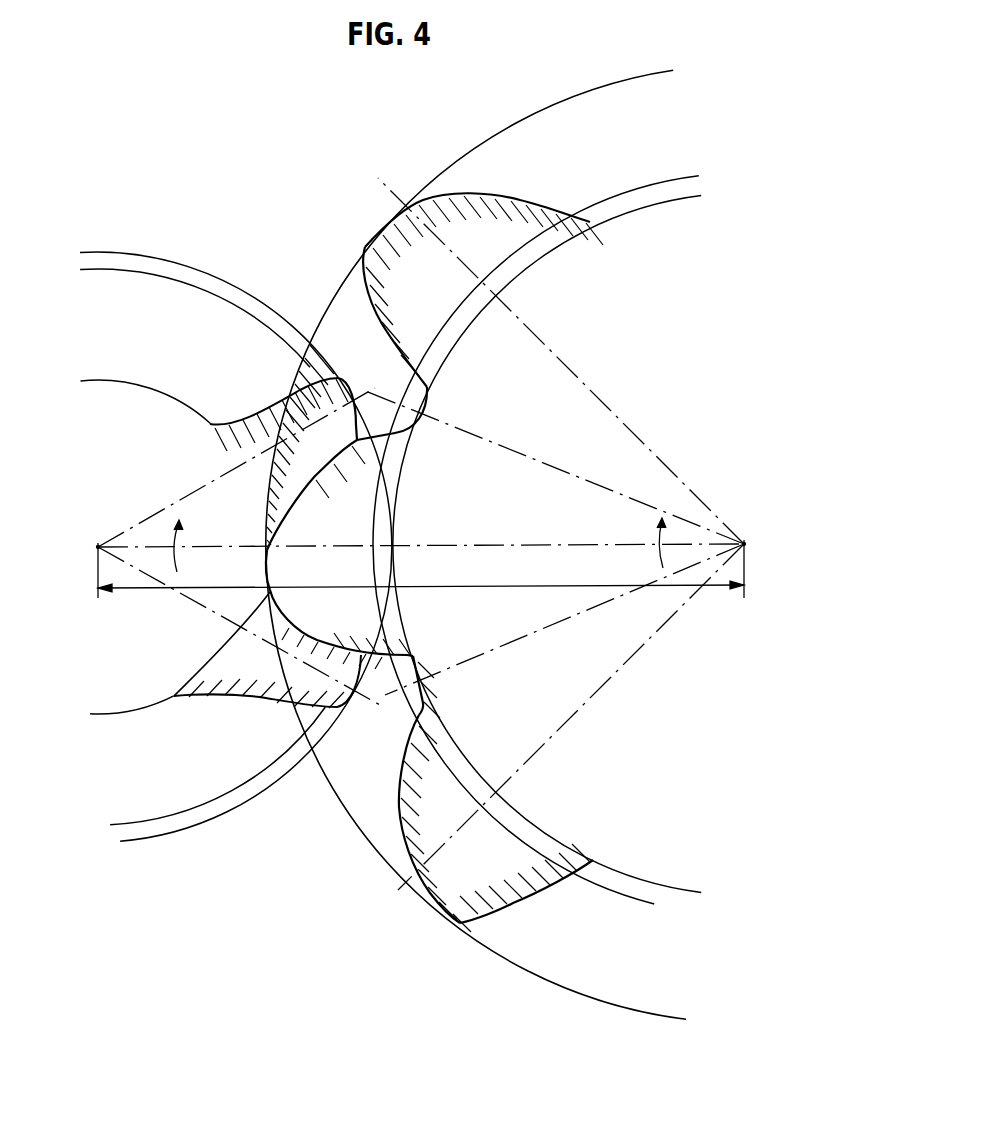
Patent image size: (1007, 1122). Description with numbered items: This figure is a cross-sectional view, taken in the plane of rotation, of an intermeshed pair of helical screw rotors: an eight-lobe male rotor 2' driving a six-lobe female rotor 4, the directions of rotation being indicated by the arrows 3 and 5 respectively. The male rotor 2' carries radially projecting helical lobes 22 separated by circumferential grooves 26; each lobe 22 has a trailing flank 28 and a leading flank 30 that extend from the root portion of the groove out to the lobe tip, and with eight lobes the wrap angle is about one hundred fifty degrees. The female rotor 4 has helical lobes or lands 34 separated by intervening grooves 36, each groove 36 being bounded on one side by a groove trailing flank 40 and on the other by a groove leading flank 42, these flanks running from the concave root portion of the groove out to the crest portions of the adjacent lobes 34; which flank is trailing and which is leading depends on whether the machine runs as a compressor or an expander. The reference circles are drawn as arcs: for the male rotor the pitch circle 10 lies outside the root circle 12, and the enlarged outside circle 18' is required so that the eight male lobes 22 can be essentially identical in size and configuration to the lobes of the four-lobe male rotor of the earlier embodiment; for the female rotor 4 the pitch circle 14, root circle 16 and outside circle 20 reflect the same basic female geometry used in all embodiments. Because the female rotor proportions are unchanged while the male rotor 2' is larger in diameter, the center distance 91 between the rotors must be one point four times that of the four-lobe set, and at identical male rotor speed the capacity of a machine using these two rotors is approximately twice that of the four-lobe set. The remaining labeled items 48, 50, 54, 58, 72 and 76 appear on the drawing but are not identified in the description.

The enlarged outside circle 18' is at (476, 544).
The outside diameter circle 20 is at (206, 243).
The root circle 16 is at (142, 388).
The pitch circle 14 is at (246, 783).
The pitch circle 10 is at (510, 828).
The root circle 12 is at (563, 840).
The helical screw female rotor 4 is at (266, 298).
The male rotor 2' is at (364, 213).
The circumferential grooves 26 is at (374, 377).
The lobe trailing flank 28 is at (383, 333).
The lobe leading flank 30 is at (511, 193).
The radially projecting lobes 22 is at (351, 524).
The groove trailing flank 40 is at (256, 414).
The groove leading flank 42 is at (253, 717).
The helical lobes or lands 34 is at (262, 669).
The grooves 36 is at (251, 392).
The center of first gear 48 is at (98, 545).
The center of second gear 50 is at (745, 542).
The radial line 54 is at (183, 494).
The angle 58 is at (171, 543).
The arrow 5 is at (181, 526).
The arrow 3 is at (658, 530).
The center line 72 is at (464, 547).
The radial line 76 is at (497, 462).
The center distance 91 is at (428, 588).